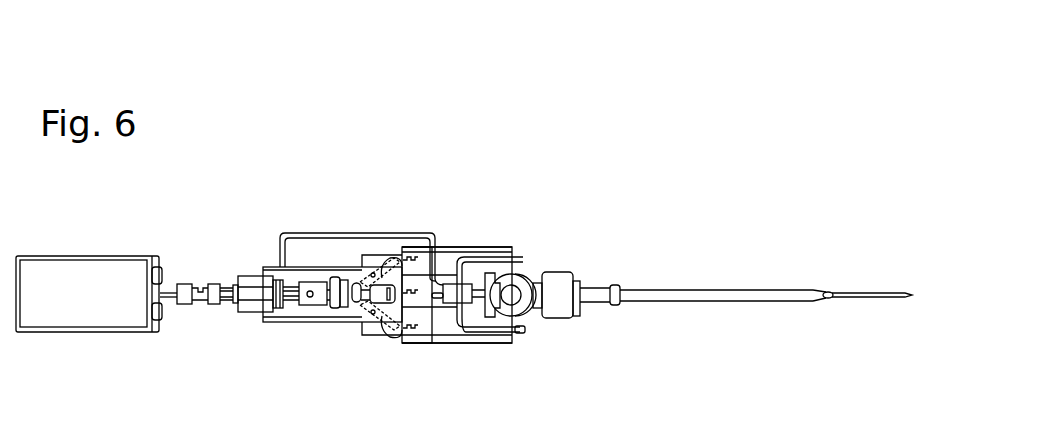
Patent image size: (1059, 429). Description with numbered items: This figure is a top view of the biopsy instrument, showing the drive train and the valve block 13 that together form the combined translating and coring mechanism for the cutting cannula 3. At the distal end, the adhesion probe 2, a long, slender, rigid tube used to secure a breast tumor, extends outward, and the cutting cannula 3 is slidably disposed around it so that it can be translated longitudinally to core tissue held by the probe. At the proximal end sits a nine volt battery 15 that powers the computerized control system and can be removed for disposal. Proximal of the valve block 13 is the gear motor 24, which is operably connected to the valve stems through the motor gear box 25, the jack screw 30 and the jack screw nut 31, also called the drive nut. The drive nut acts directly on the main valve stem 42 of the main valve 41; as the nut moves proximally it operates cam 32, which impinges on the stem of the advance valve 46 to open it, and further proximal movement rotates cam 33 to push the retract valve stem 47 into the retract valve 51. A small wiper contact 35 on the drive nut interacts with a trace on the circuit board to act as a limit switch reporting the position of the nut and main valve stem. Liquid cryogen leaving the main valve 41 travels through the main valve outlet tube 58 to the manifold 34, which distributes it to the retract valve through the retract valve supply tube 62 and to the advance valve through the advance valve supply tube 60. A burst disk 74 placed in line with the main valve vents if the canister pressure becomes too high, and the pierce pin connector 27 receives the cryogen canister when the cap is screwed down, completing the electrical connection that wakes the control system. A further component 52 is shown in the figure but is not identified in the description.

The adhesion probe 2 is at (855, 293).
The cutting cannula 3 is at (678, 290).
The valve block 13 is at (468, 227).
The battery 15 is at (58, 263).
The gear motor 24 is at (248, 275).
The motor gear box 25 is at (322, 280).
The pierce pin connector 27 is at (553, 250).
The jack screw 30 is at (330, 308).
The jack screw nut 31 is at (363, 308).
The cam 32 is at (383, 335).
The cam 33 is at (387, 262).
The manifold 34 is at (450, 303).
The wiper contact 35 is at (387, 290).
The main valve 41 is at (415, 310).
The main valve stem 42 is at (410, 287).
The advance valve 46 is at (495, 246).
The retract valve stem 47 is at (417, 258).
The retract valve 51 is at (502, 345).
The lower slot 52 is at (412, 335).
The main valve outlet tube 58 is at (437, 298).
The advance valve supply tube 60 is at (522, 331).
The retract valve supply tube 62 is at (525, 263).
The burst disk 74 is at (570, 266).